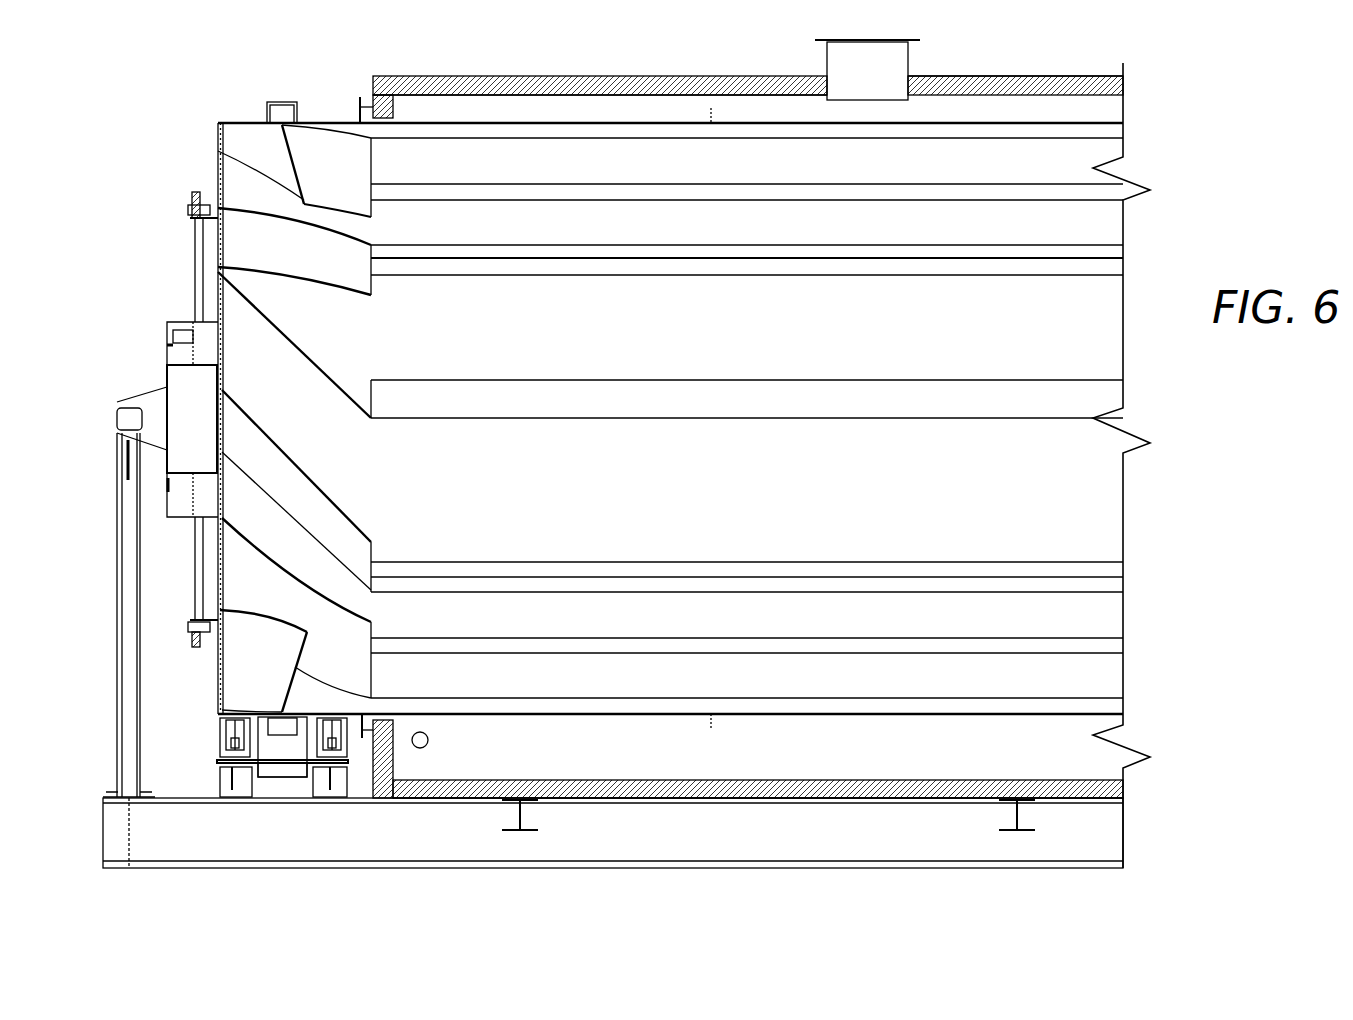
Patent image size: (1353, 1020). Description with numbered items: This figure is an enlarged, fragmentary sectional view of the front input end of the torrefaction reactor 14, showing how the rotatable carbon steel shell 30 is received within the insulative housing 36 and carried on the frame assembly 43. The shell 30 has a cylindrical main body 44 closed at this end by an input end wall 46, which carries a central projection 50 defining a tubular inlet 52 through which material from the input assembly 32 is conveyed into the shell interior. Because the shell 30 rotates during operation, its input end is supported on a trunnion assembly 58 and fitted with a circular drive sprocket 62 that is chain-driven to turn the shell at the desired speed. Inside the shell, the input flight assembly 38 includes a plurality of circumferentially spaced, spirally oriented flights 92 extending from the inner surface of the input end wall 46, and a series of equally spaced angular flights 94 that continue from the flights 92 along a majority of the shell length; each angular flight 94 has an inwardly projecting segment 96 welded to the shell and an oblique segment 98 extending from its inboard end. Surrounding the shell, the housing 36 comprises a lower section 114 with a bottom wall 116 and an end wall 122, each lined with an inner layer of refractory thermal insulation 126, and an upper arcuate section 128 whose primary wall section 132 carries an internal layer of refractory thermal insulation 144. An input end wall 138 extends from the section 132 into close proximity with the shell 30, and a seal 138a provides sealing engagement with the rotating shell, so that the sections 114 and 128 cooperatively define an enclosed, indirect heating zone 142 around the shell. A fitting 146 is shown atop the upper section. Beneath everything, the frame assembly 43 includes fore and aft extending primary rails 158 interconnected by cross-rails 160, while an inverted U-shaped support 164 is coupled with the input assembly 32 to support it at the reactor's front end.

The torrefaction reactor 14 is at (1212, 155).
The shell 30 is at (232, 118).
The input assembly 32 is at (104, 262).
The insulative housing 36 is at (1150, 95).
The input flight assembly 38 is at (1072, 552).
The frame assembly 43 is at (1130, 830).
The cylindrical main body 44 is at (660, 122).
The input end wall 46 is at (223, 156).
The central projection 50 is at (210, 318).
The tubular inlet 52 is at (180, 375).
The trunnion assembly 58 is at (298, 785).
The drive sprocket 62 is at (196, 637).
The spirally oriented flights 92 is at (330, 385).
The angular flights 94 is at (1082, 200).
The inwardly projecting segment 96 is at (890, 165).
The oblique segment 98 is at (838, 195).
The lower section 114 is at (1132, 737).
The bottom wall 116 is at (695, 800).
The end wall 122 is at (373, 770).
The refractory thermal insulation 126 is at (630, 785).
The upper arcuate section 128 is at (1040, 62).
The wall section 132 is at (965, 76).
The input end wall 138 is at (372, 92).
The seal 138a is at (362, 110).
The indirect heating zone 142 is at (844, 748).
The refractory thermal insulation 144 is at (472, 88).
The access port 146 is at (830, 55).
The primary rails 158 is at (900, 848).
The cross-rails 160 is at (130, 840).
The inverted U-shaped support 164 is at (127, 730).